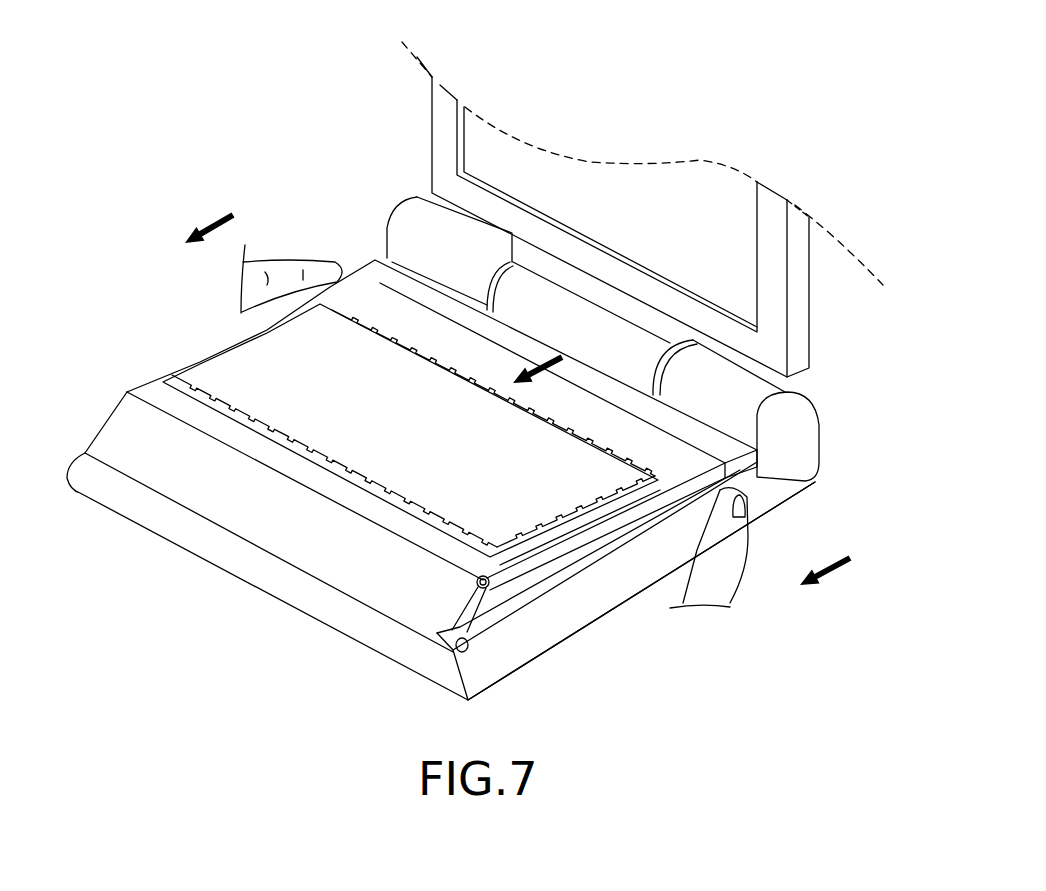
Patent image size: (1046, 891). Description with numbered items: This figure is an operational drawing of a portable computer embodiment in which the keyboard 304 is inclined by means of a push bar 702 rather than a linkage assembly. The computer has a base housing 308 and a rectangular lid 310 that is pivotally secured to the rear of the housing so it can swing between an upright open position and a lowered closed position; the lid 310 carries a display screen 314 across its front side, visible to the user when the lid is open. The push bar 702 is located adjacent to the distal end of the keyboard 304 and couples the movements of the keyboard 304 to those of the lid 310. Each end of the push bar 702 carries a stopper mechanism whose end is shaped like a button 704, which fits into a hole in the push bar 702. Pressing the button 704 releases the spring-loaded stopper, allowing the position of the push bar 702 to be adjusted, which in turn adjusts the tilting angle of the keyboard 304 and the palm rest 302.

The palm rest 302 is at (360, 550).
The keyboard 304 is at (510, 503).
The base housing 308 is at (535, 648).
The lid 310 is at (800, 352).
The display screen 314 is at (733, 275).
The push bar 702 is at (693, 462).
The button 704 is at (757, 475).